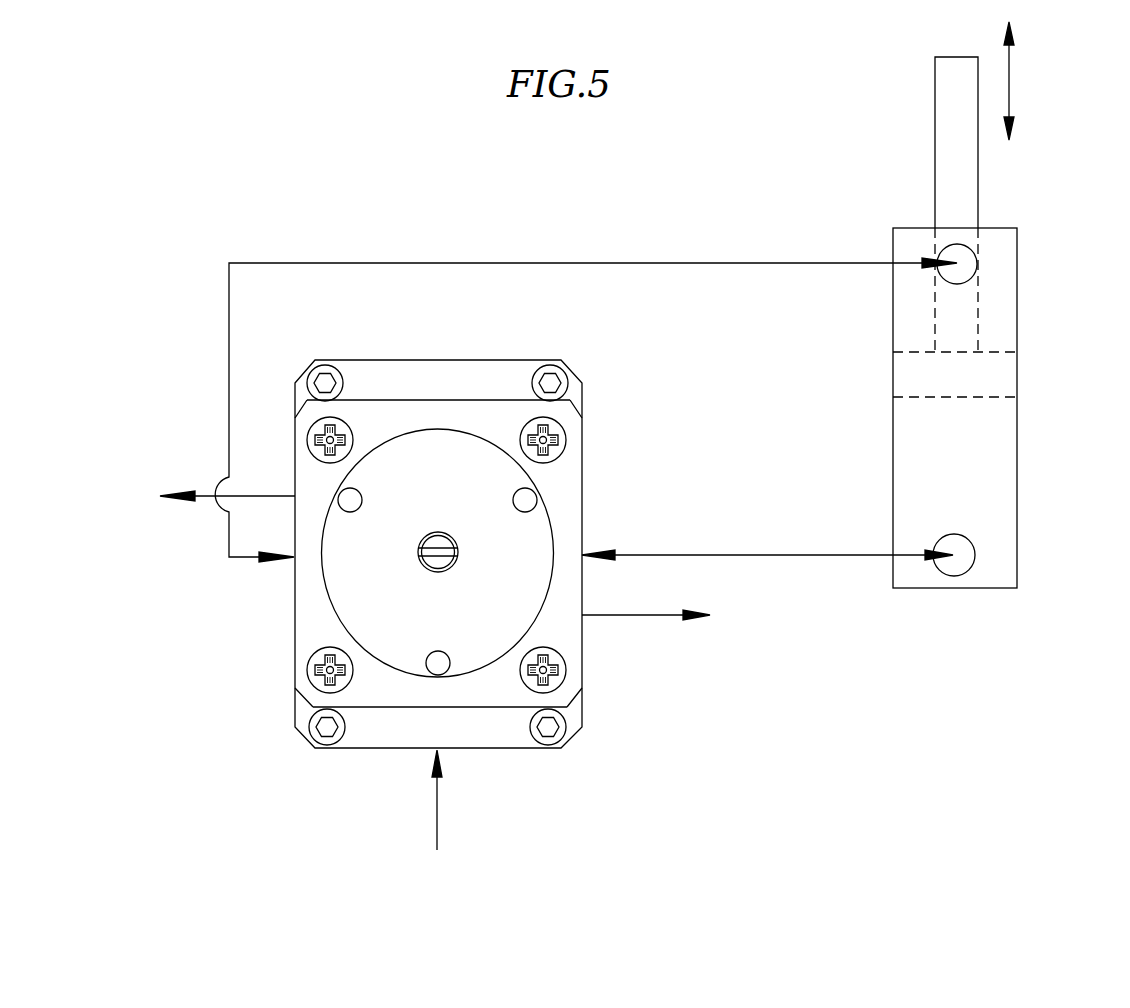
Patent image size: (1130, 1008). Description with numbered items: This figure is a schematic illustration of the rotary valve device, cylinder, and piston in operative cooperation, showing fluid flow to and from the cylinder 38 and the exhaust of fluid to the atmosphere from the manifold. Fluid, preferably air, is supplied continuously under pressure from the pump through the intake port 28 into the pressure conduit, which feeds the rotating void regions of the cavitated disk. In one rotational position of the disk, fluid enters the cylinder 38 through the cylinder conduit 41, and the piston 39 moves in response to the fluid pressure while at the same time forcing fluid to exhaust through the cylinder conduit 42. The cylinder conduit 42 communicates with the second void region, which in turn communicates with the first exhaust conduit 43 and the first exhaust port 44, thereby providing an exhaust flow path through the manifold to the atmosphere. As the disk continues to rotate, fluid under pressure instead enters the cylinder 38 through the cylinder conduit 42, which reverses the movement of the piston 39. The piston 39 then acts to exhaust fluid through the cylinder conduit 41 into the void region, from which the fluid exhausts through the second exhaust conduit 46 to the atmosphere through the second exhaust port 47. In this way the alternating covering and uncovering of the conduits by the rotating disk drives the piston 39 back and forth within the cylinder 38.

The intake port 28 is at (437, 742).
The cylinder 38 is at (1018, 300).
The piston 39 is at (979, 192).
The cylinder conduit 41 is at (773, 550).
The cylinder conduit 42 is at (683, 255).
The first exhaust conduit 43 is at (300, 553).
The first exhaust port 44 is at (300, 490).
The second exhaust conduit 46 is at (578, 556).
The second exhaust port 47 is at (578, 627).